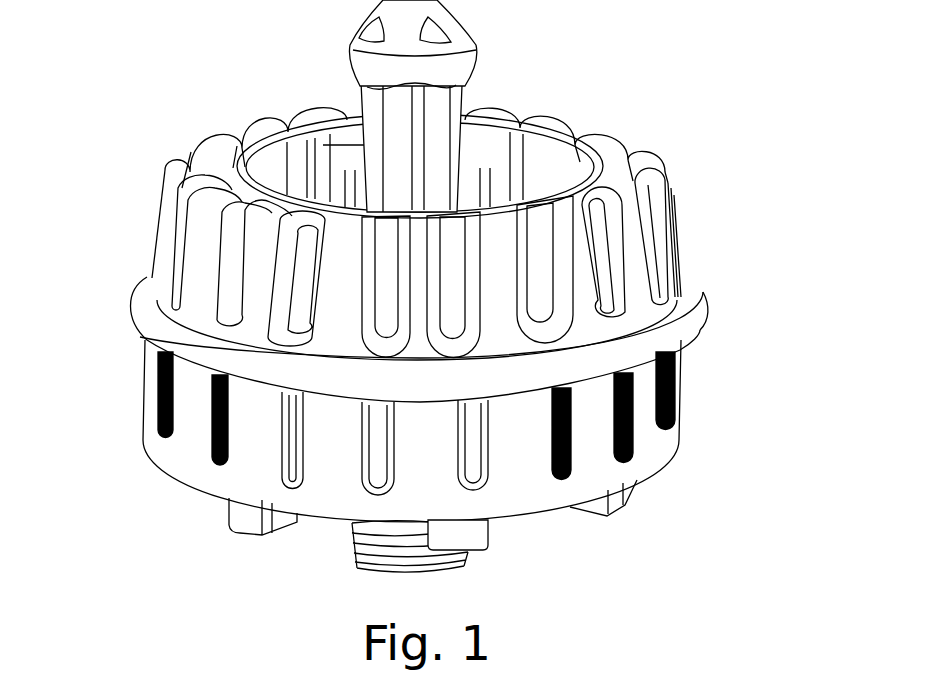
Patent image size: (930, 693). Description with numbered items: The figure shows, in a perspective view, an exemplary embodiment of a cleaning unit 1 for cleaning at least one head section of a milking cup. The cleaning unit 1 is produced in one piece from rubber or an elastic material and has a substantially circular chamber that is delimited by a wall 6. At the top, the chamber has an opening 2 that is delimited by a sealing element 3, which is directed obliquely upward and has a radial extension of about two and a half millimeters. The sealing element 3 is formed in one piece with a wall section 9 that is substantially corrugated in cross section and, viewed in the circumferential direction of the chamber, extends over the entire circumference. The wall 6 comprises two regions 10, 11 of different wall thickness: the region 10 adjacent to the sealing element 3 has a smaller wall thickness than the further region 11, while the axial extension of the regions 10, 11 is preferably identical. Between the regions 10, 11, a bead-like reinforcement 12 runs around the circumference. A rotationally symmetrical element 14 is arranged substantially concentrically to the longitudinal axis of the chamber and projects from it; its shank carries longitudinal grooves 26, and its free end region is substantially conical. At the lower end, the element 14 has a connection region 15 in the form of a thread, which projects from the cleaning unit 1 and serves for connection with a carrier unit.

The cleaning unit 1 is at (425, 308).
The opening 2 is at (540, 163).
The sealing element 3 is at (521, 118).
The wall 6 is at (645, 438).
The wall section 9 is at (118, 215).
The region 10 is at (715, 207).
The further region 11 is at (115, 472).
The reinforcement 12 is at (143, 317).
The rotationally symmetrical element 14 is at (322, 67).
The connection region 15 is at (435, 562).
The grooves 26 is at (305, 128).